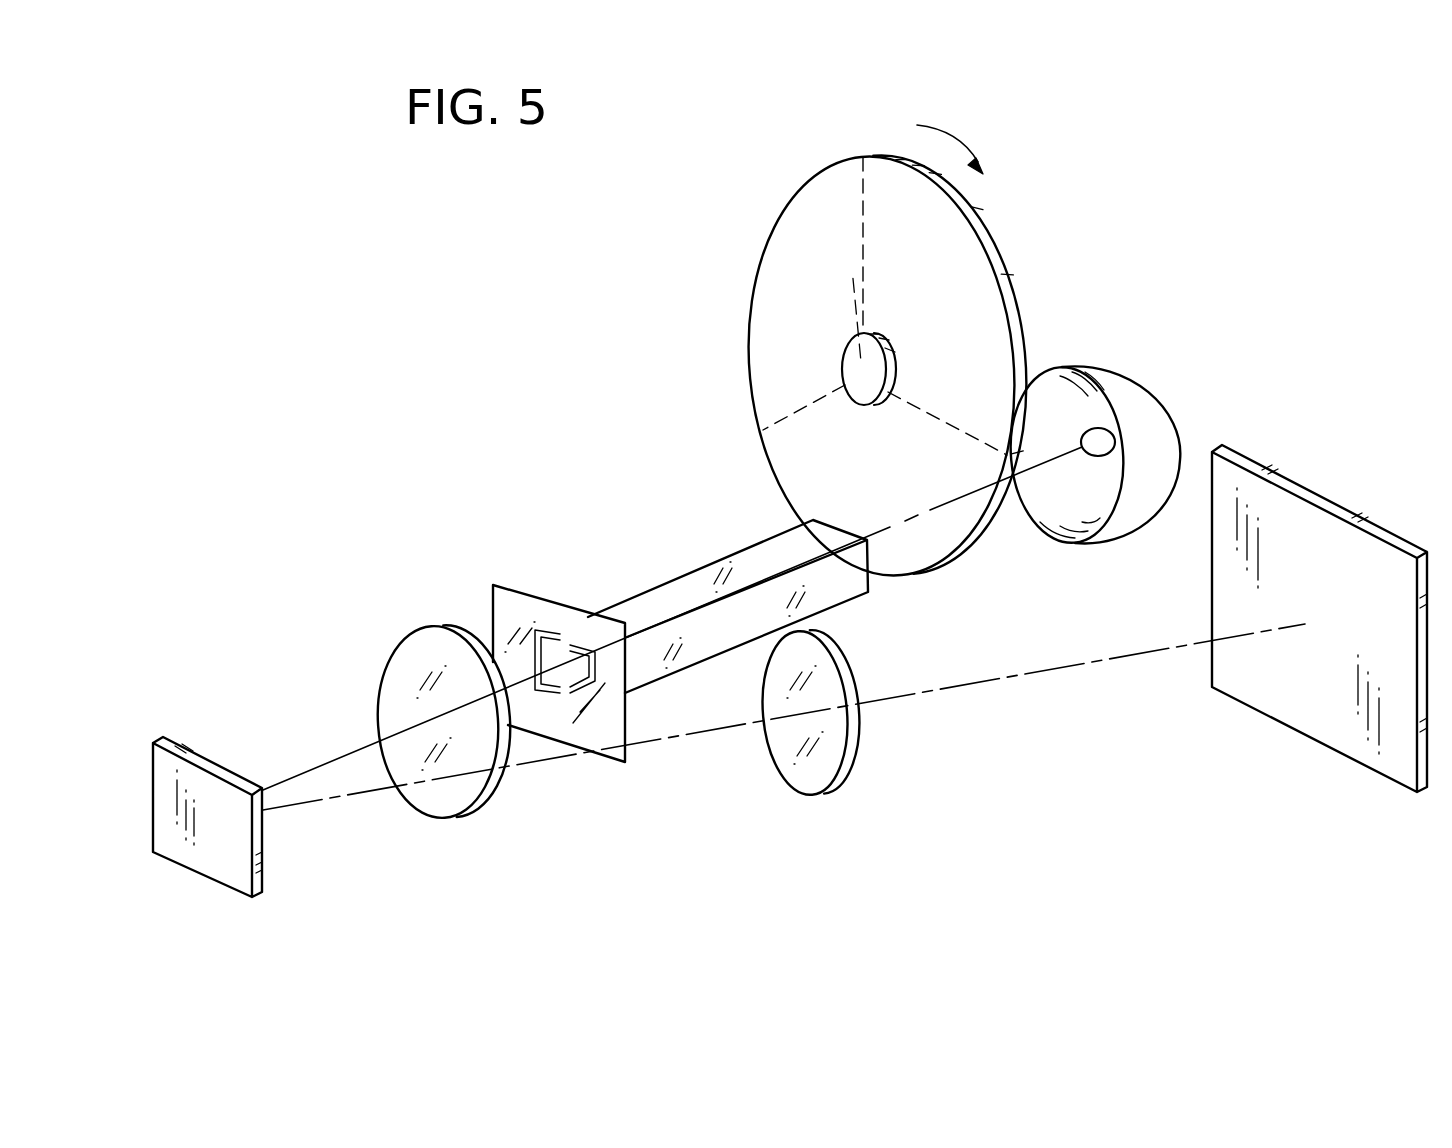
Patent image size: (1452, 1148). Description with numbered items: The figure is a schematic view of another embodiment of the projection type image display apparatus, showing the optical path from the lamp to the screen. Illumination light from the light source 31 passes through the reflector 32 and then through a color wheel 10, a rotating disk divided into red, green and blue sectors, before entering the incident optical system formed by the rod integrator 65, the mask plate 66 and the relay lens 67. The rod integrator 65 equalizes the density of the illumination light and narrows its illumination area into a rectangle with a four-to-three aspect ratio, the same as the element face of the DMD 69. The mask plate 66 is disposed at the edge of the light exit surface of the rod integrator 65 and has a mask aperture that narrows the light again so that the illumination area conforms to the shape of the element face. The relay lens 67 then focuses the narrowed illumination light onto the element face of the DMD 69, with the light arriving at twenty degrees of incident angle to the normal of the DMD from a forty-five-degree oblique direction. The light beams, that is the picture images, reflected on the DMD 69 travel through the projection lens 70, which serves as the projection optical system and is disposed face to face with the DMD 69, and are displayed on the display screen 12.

The color wheel 10 is at (778, 212).
The display screen 12 is at (1290, 727).
The light source 31 is at (1089, 428).
The reflector 32 is at (1032, 535).
The rod integrator 65 is at (690, 567).
The mask plate 66 is at (495, 585).
The relay lens 67 is at (392, 660).
The DMD 69 is at (157, 855).
The projection lens 70 is at (780, 778).